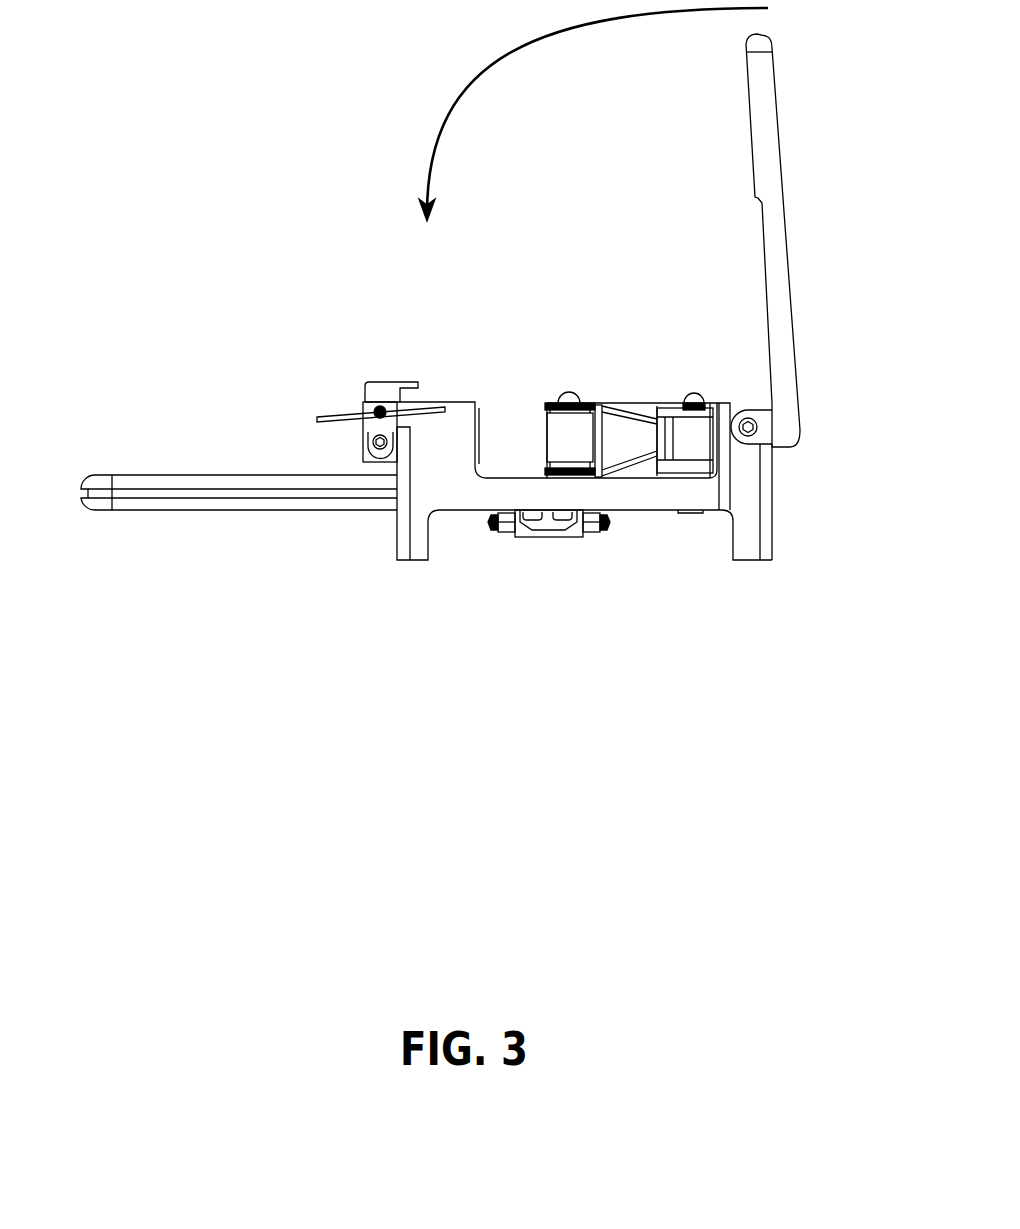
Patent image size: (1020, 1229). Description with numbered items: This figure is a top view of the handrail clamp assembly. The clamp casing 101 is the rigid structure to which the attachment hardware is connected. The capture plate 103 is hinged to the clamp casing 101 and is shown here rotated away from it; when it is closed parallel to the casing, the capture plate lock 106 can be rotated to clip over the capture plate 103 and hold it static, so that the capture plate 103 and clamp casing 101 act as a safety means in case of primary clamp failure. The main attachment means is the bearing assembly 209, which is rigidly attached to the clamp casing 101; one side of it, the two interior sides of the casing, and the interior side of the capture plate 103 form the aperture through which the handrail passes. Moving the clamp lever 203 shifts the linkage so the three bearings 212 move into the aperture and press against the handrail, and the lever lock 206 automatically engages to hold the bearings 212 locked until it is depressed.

The clamp casing 101 is at (752, 560).
The capture plate 103 is at (779, 147).
The capture plate lock 106 is at (365, 383).
The clamp lever 203 is at (138, 512).
The lever lock 206 is at (533, 537).
The bearing assembly 209 is at (542, 359).
The bearings 212 is at (538, 412).